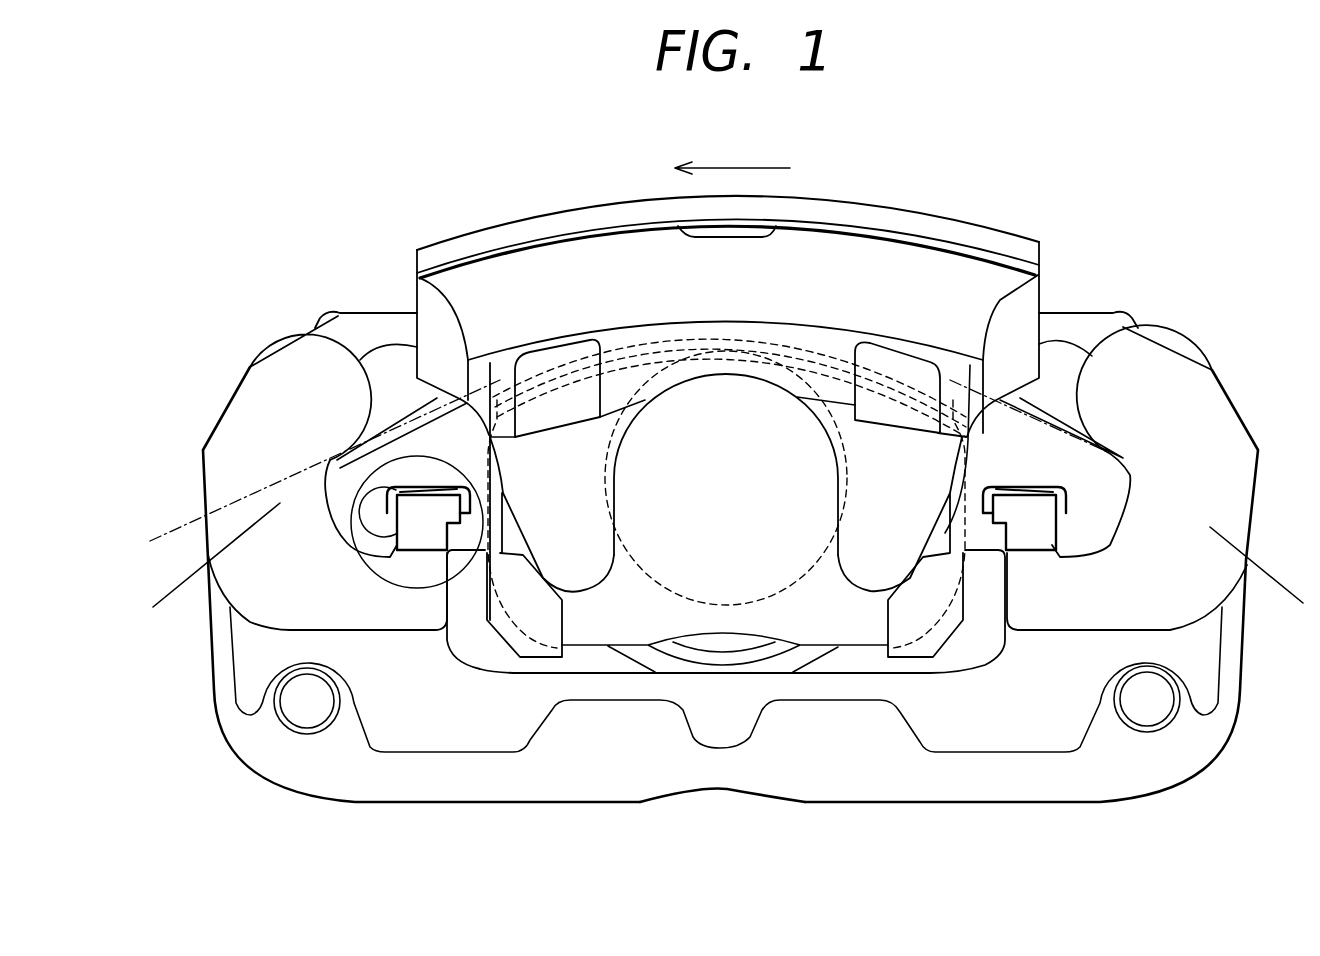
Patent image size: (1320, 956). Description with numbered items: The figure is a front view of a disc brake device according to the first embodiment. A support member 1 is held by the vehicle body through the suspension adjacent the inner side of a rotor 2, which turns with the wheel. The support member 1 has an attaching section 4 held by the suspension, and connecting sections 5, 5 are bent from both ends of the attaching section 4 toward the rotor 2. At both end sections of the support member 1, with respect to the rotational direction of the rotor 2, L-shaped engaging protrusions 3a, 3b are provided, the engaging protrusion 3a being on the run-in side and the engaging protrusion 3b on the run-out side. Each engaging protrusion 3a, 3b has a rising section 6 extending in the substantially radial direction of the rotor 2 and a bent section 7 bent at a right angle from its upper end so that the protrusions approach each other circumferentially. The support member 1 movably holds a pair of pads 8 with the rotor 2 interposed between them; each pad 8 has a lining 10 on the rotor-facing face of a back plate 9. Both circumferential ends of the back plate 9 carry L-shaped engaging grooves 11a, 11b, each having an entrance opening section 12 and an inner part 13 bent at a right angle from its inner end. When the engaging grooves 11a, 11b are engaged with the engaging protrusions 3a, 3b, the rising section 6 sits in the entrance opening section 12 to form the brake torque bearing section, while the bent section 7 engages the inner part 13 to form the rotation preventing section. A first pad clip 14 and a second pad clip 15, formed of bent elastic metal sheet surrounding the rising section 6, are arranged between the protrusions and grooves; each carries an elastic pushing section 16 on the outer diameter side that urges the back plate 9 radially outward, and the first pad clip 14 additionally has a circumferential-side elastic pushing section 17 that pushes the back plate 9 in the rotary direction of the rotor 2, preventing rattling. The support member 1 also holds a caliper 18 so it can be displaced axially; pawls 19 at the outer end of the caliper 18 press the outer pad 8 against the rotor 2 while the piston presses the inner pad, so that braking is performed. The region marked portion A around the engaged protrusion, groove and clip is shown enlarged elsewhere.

The support member 1 is at (1147, 773).
The rotor 2 is at (167, 594).
The engaging protrusion (run-in side) 3a is at (1100, 543).
The engaging protrusion (run-out side) 3b is at (355, 500).
The attaching section 4 is at (992, 800).
The connecting section 5 is at (295, 368).
The rising section 6 is at (415, 553).
The bent section 7 is at (437, 473).
The pad 8 is at (325, 478).
The back plate 9 is at (410, 440).
The lining 10 is at (520, 630).
The engaging groove (run-in side) 11a is at (1075, 502).
The engaging groove (run-out side) 11b is at (413, 540).
The entrance opening section 12 is at (440, 540).
The inner part 13 is at (450, 545).
The first pad clip 14 is at (967, 450).
The second pad clip 15 is at (488, 440).
The elastic pushing section on the outer diameter side 16 is at (338, 493).
The elastic pushing section on the circumferential side 17 is at (1000, 600).
The caliper 18 is at (548, 262).
The pawl 19 is at (590, 577).
The portion A is at (619, 470).